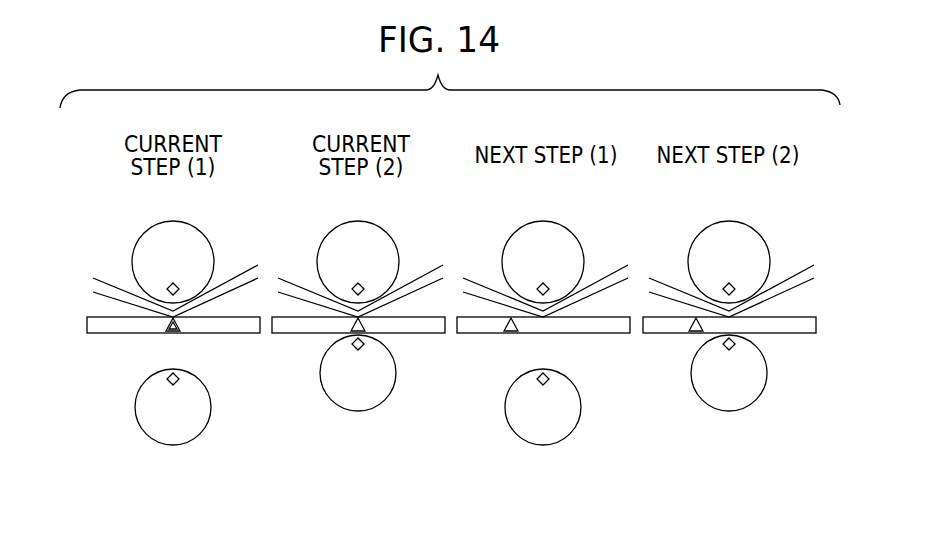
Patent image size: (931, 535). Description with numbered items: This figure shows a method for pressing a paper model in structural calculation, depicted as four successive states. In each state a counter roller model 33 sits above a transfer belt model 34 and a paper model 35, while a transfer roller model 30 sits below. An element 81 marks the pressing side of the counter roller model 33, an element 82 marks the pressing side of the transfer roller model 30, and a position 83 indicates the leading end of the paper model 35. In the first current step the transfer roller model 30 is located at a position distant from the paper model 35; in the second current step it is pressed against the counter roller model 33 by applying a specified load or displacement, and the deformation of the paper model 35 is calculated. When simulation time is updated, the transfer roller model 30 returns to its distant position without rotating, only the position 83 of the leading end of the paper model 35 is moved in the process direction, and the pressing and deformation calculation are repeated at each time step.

The transfer roller model 30 is at (143, 420).
The counter roller model 33 is at (150, 233).
The transfer belt model 34 is at (110, 290).
The paper model 35 is at (100, 334).
The element on pressing side of counter roller model 81 is at (176, 283).
The element on pressing side of transfer roller model 82 is at (178, 383).
The position of leading end of paper sheet 83 is at (174, 331).